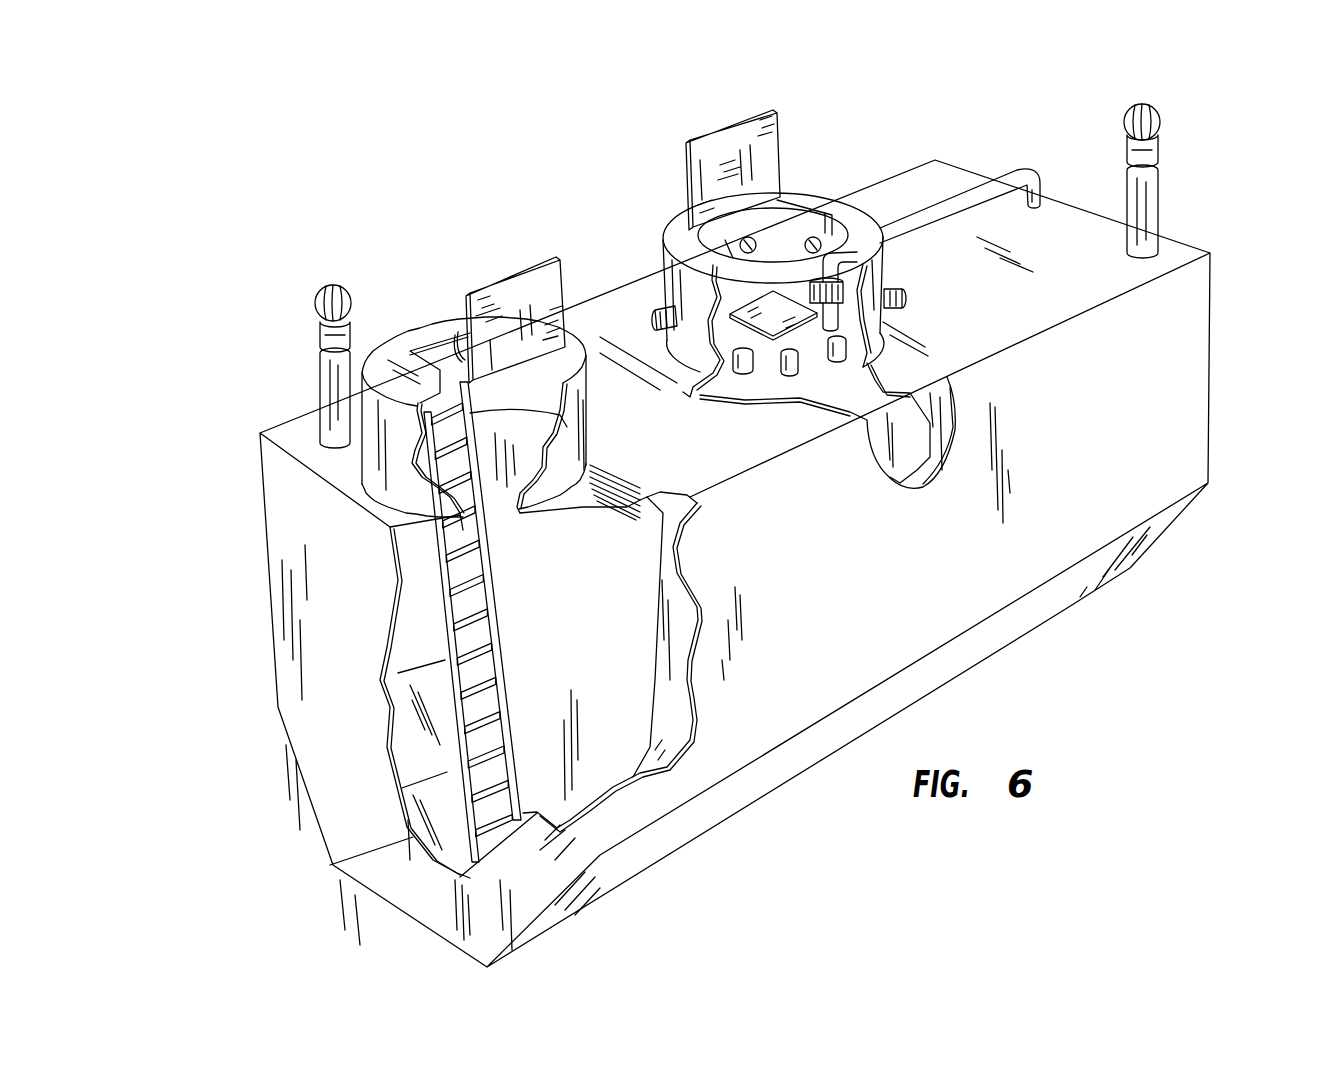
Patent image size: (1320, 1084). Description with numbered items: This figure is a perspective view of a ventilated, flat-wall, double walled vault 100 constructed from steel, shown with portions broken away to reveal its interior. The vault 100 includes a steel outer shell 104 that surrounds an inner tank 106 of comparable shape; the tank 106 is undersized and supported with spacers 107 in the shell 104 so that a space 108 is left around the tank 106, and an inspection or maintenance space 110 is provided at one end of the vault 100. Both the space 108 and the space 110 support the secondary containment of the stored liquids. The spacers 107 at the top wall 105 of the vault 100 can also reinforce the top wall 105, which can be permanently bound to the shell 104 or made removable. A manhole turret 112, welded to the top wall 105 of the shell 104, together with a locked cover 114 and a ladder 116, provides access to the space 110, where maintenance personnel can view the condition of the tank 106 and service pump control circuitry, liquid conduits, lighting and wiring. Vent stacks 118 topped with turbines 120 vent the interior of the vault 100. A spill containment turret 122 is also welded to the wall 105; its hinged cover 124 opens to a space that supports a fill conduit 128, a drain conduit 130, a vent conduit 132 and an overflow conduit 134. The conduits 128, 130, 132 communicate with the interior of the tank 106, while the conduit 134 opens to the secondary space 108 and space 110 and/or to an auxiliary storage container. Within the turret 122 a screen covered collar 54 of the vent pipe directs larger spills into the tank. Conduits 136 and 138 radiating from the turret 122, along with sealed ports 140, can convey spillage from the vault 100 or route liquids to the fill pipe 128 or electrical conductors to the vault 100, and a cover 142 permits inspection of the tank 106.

The double walled vault 100 is at (1233, 310).
The outer shell 104 is at (287, 720).
The top wall 105 is at (633, 283).
The inner tank 106 is at (673, 710).
The spacers 107 is at (688, 395).
The space 108 is at (745, 398).
The inspection or maintenance space 110 is at (437, 840).
The manhole turret 112 is at (397, 327).
The locked cover 114 is at (507, 280).
The ladder 116 is at (493, 567).
The vent stacks 118 is at (318, 387).
The turbines 120 is at (317, 293).
The spill containment turret 122 is at (828, 192).
The hinged cover 124 is at (710, 133).
The fill conduit 128 is at (743, 372).
The drain conduit 130 is at (790, 374).
The vent conduit 132 is at (835, 360).
The overflow conduit 134 is at (840, 270).
The screen covered collar 54 is at (817, 277).
The conduit 136 is at (655, 317).
The conduit 138 is at (904, 298).
The sealed ports 140 is at (810, 238).
The cover 142 is at (750, 316).